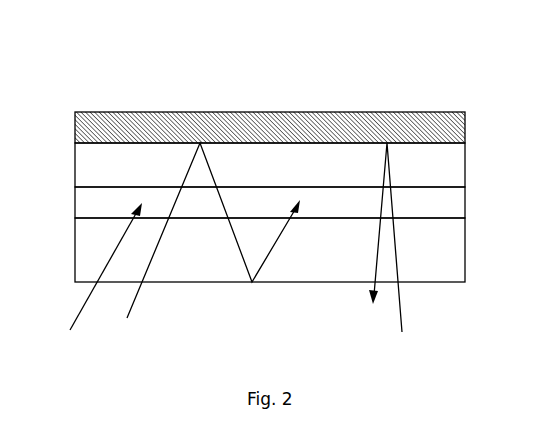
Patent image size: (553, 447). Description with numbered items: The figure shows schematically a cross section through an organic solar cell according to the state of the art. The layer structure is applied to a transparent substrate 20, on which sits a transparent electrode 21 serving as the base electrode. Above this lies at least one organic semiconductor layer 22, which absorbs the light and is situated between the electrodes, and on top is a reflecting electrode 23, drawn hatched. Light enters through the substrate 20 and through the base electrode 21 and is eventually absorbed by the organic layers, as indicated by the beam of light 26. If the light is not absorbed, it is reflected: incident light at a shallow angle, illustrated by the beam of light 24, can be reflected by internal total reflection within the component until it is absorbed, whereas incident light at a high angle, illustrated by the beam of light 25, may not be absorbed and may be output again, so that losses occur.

The transparent substrate 20 is at (457, 248).
The transparent electrode 21 is at (457, 200).
The organic semiconductor layer 22 is at (457, 162).
The reflecting electrode 23 is at (457, 127).
The beam of light 24 is at (210, 246).
The beam of light 25 is at (391, 252).
The beam of light 26 is at (98, 280).